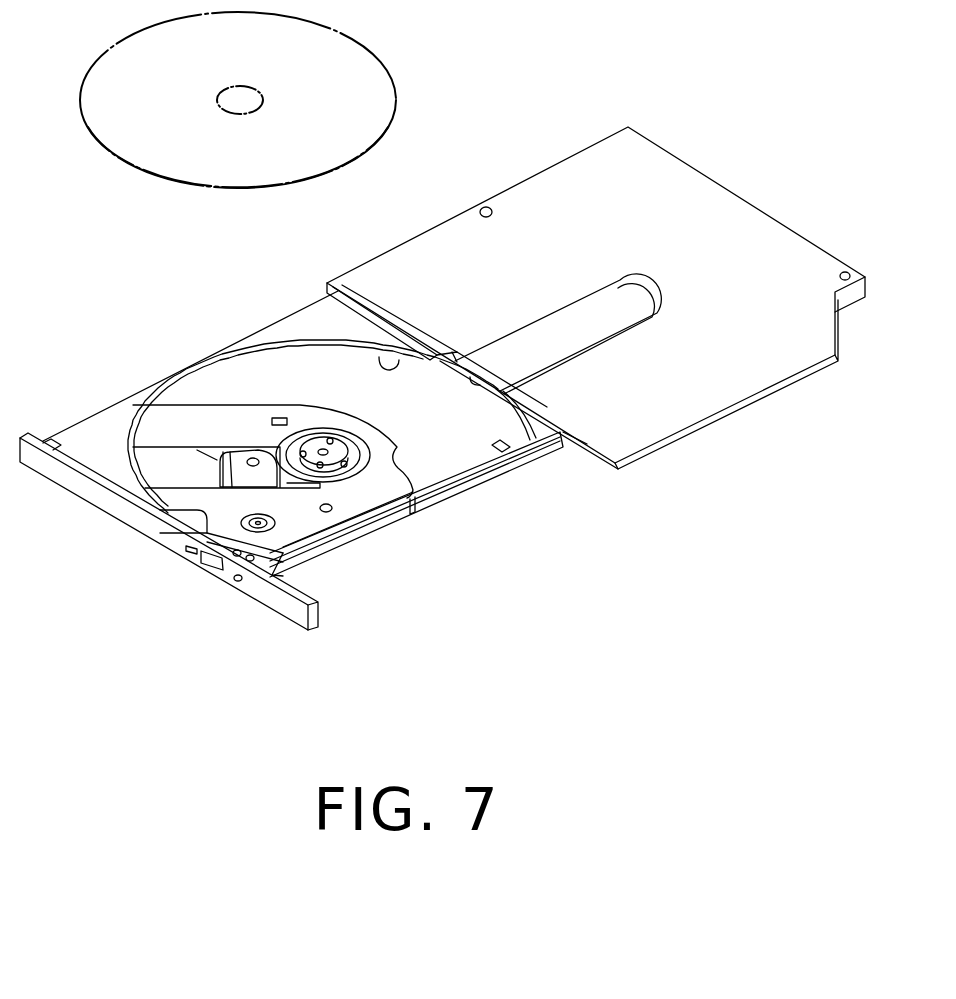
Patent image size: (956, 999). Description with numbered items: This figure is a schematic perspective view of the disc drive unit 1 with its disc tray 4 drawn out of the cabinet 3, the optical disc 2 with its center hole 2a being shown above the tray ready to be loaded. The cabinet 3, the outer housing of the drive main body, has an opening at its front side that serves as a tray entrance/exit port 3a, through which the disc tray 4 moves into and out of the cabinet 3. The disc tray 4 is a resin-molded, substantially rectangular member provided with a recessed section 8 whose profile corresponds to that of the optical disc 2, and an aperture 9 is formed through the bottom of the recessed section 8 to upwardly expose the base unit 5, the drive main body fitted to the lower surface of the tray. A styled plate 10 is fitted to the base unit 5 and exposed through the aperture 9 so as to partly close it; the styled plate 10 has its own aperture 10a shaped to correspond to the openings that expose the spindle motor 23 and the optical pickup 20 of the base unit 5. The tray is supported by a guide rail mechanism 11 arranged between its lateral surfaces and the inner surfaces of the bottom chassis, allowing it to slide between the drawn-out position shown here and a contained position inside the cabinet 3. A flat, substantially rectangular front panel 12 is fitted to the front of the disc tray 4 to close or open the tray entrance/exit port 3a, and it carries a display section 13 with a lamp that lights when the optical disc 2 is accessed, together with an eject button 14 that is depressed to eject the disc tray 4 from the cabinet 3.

The disc drive unit 1 is at (101, 339).
The optical disc 2 is at (269, 100).
The center hole of disc 2a is at (252, 89).
The cabinet 3 is at (596, 274).
The tray entrance/exit port 3a is at (490, 380).
The disc tray 4 is at (95, 437).
The base unit 5 is at (288, 390).
The recessed section 8 is at (405, 355).
The aperture 9 is at (450, 486).
The styled plate 10 is at (347, 498).
The aperture 10a is at (182, 447).
The guide rail mechanism 11 is at (413, 517).
The front panel 12 is at (128, 512).
The display section 13 is at (188, 553).
The eject button 14 is at (208, 573).
The optical pickup 20 is at (238, 462).
The spindle motor 23 is at (313, 433).